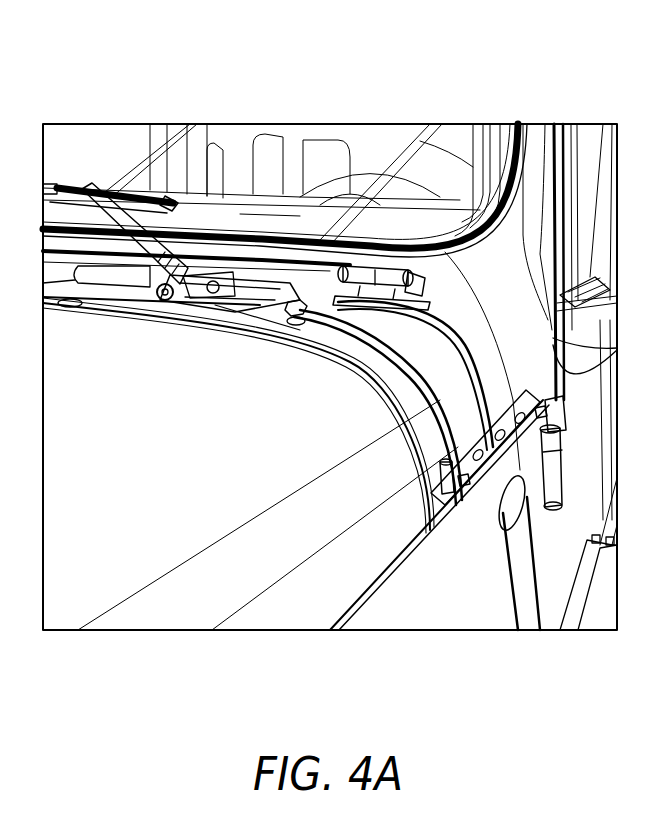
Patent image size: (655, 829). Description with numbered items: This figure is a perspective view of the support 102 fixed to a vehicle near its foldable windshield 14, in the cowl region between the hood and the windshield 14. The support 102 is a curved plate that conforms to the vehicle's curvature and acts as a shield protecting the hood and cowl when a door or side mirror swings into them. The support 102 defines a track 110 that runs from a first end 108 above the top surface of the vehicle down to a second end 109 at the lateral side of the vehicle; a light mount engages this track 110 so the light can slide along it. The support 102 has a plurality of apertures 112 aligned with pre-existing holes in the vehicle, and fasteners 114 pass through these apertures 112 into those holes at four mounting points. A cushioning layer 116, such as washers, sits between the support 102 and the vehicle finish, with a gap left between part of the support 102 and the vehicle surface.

The foldable windshield 14 is at (532, 231).
The support 102 is at (462, 333).
The first end 108 is at (345, 268).
The second end 109 is at (492, 480).
The track 110 is at (527, 497).
The apertures 112 is at (473, 507).
The fasteners 114 is at (293, 300).
The cushioning layer 116 is at (292, 322).